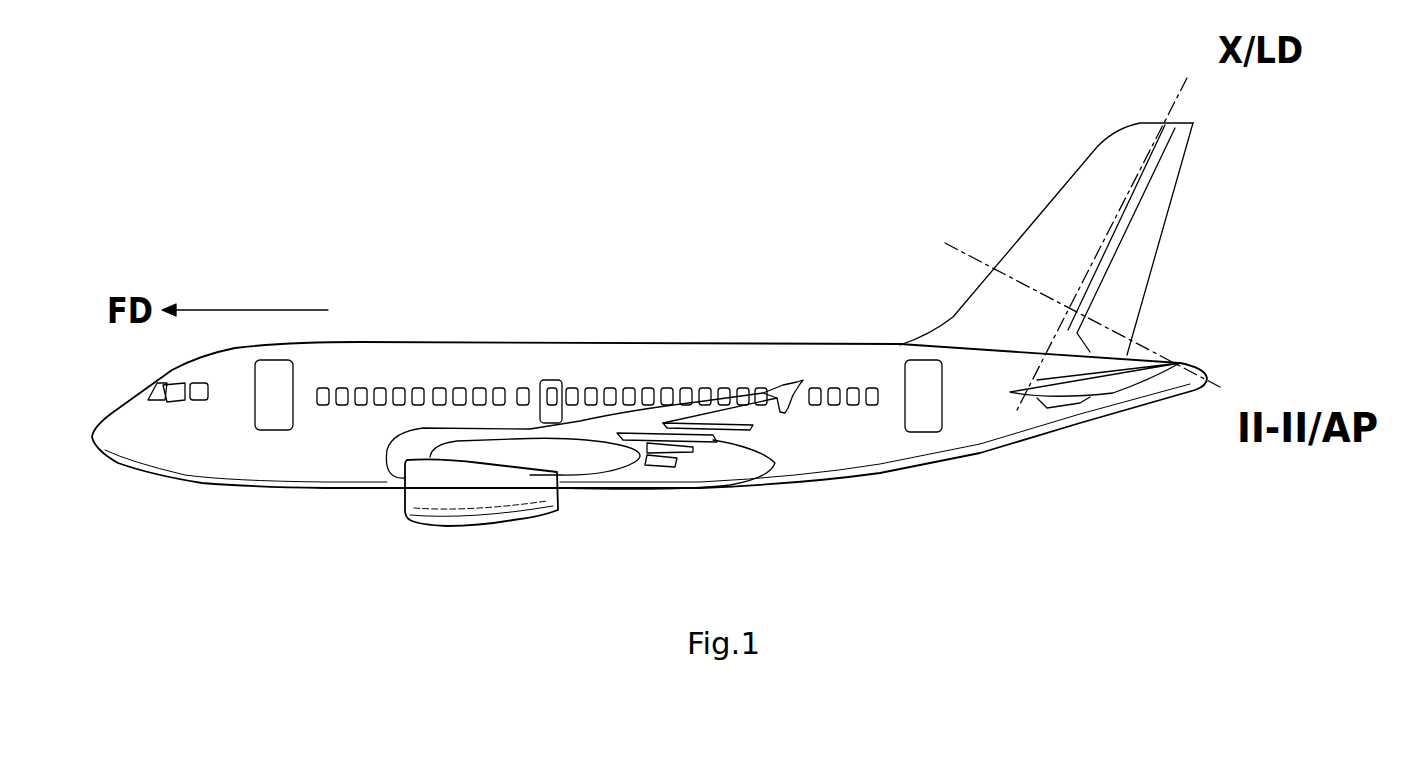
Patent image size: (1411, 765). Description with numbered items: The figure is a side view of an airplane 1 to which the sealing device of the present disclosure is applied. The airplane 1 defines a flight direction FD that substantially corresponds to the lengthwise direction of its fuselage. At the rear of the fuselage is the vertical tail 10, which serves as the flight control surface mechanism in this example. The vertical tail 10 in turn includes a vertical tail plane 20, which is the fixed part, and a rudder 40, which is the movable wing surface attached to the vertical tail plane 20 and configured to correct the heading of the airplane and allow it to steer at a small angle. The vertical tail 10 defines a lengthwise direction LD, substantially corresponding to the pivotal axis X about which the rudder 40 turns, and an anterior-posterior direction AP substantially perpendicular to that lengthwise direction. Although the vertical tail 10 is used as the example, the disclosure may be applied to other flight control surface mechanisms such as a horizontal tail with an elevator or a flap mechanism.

The airplane 1 is at (460, 198).
The vertical tail 10 is at (990, 226).
The vertical tail plane 20 is at (1100, 180).
The rudder 40 is at (1133, 273).